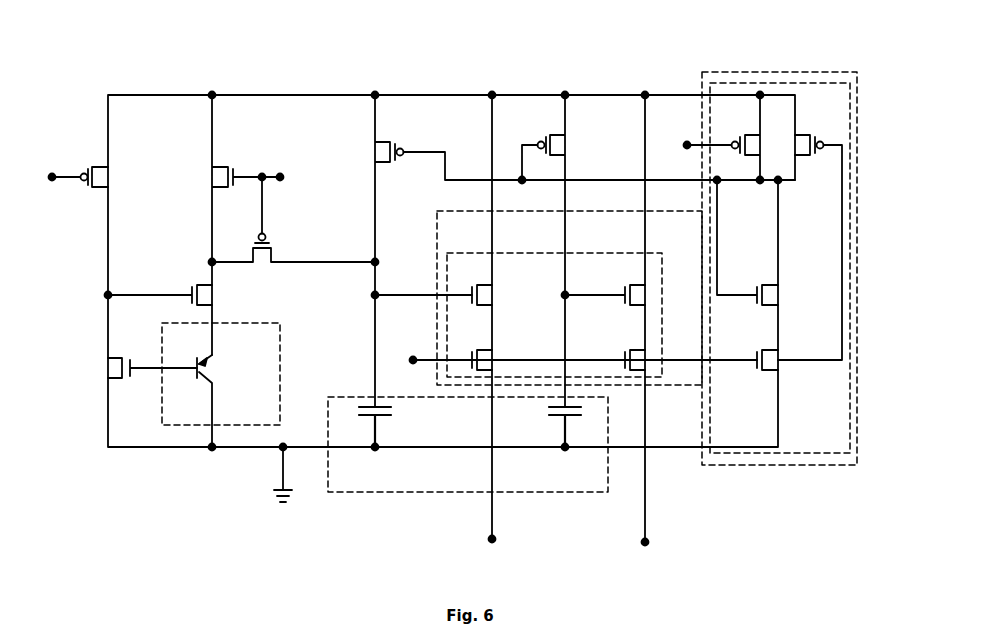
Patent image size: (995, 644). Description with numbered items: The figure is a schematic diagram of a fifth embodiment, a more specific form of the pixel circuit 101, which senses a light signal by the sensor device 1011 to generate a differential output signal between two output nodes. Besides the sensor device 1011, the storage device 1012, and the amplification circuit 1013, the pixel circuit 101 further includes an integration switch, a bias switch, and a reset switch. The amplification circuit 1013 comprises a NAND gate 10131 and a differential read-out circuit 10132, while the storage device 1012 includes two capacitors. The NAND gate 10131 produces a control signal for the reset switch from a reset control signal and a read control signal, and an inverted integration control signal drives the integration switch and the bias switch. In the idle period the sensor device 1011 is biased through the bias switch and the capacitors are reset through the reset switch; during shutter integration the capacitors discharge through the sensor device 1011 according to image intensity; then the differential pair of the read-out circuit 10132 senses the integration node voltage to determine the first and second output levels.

The pixel circuit 101 is at (605, 52).
The sensor device 1011 is at (267, 416).
The storage device 1012 is at (383, 482).
The amplification circuit 1013 is at (486, 238).
The NAND gate 10131 is at (841, 442).
The differential read-out circuit 10132 is at (555, 253).